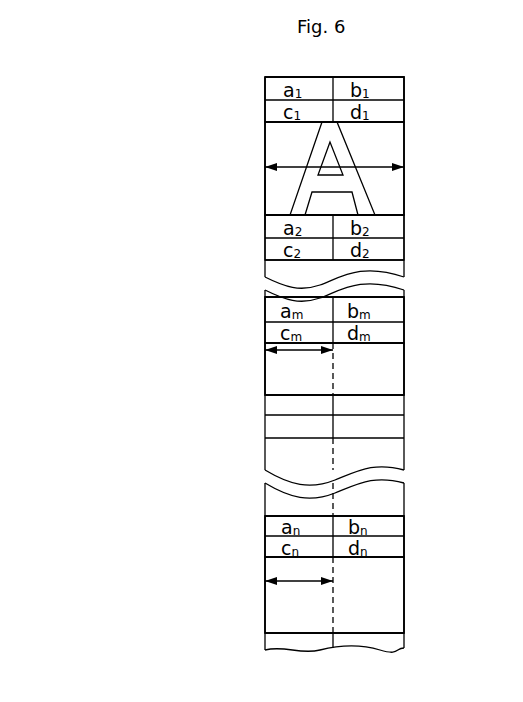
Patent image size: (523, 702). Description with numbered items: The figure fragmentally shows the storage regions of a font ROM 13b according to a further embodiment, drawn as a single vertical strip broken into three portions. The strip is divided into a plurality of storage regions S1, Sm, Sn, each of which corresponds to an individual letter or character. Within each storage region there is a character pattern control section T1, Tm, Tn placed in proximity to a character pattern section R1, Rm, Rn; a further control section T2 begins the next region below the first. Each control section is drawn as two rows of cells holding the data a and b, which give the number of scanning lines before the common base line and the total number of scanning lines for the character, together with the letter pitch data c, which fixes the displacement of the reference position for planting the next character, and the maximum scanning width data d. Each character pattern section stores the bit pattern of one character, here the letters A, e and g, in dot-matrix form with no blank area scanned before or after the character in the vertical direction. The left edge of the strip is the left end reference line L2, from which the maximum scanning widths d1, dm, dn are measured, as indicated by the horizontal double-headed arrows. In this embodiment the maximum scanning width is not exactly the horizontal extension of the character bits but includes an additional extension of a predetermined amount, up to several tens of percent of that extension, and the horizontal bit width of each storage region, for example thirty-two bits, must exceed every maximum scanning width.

The font ROM 13b is at (264, 145).
The maximum scanning width d1 is at (290, 167).
The left end reference line L2 is at (265, 205).
The character pattern control section T1 is at (395, 90).
The character pattern section R1 is at (393, 142).
The storage region S1 is at (458, 70).
The character pattern control section T2 is at (395, 229).
The character pattern control section Tm is at (397, 311).
The character pattern section Rm is at (395, 365).
The storage region Sm is at (458, 288).
The maximum scanning width dm is at (278, 363).
The character pattern control section Tn is at (397, 530).
The character pattern section Rn is at (390, 588).
The storage region Sn is at (458, 515).
The maximum scanning width dn is at (282, 597).